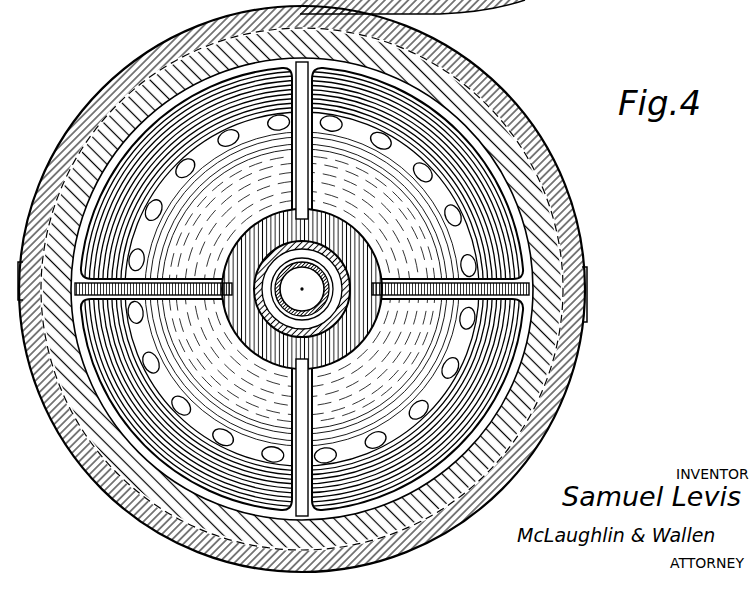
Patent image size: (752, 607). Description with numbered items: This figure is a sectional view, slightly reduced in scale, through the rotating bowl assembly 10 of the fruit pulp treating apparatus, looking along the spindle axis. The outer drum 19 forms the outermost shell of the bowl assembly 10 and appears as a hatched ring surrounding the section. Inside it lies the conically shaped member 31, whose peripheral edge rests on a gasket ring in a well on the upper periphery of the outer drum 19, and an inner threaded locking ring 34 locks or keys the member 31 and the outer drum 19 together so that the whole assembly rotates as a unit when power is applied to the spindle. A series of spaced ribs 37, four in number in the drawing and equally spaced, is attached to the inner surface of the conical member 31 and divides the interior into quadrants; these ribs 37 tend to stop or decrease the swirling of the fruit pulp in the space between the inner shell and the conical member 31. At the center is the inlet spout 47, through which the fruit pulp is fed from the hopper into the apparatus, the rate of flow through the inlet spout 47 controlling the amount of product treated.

The bowl assembly 10 is at (561, 203).
The outer drum 19 is at (177, 68).
The conically shaped member 31 is at (167, 123).
The inner threaded locking ring 34 is at (572, 370).
The ribs 37 is at (217, 199).
The inlet spout 47 is at (318, 315).